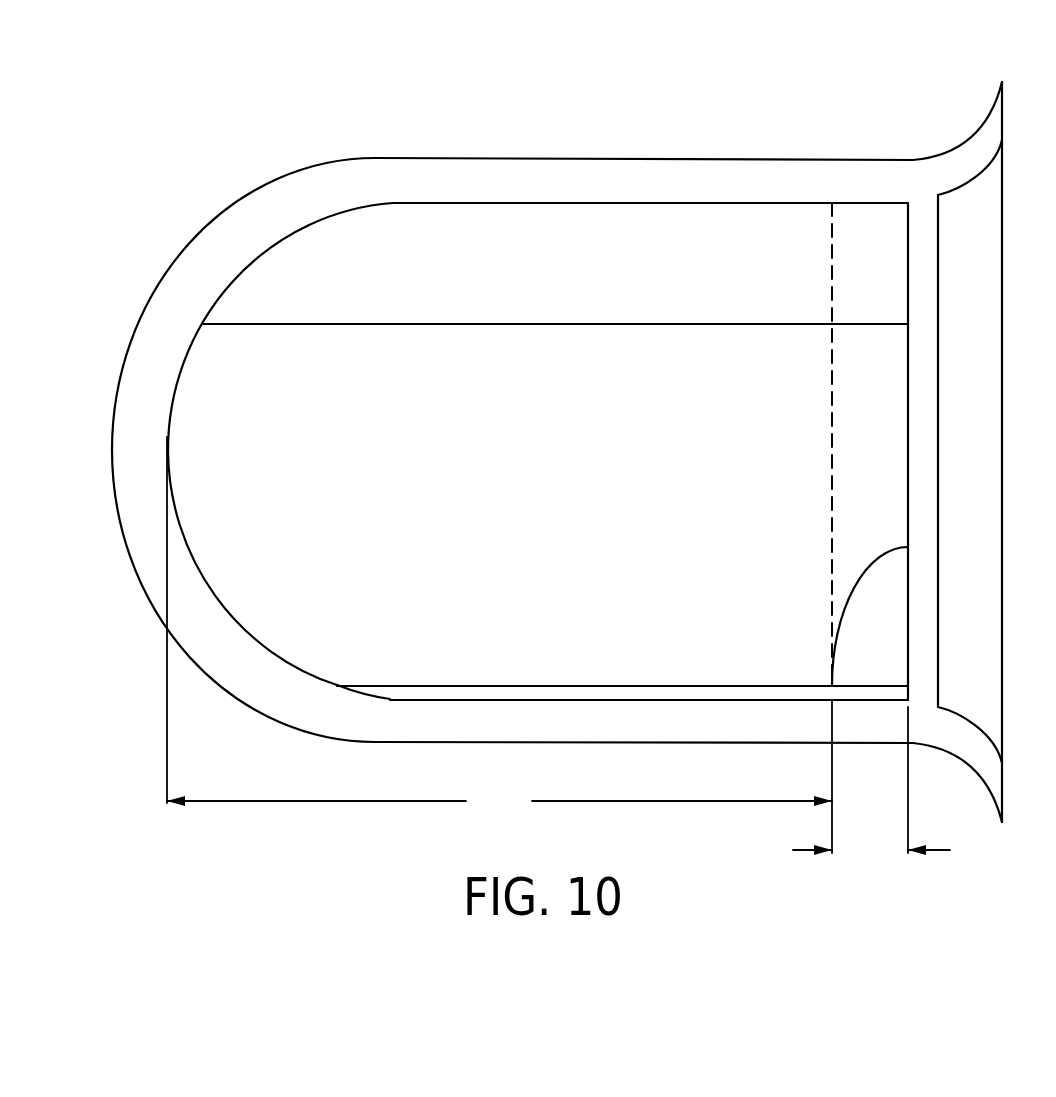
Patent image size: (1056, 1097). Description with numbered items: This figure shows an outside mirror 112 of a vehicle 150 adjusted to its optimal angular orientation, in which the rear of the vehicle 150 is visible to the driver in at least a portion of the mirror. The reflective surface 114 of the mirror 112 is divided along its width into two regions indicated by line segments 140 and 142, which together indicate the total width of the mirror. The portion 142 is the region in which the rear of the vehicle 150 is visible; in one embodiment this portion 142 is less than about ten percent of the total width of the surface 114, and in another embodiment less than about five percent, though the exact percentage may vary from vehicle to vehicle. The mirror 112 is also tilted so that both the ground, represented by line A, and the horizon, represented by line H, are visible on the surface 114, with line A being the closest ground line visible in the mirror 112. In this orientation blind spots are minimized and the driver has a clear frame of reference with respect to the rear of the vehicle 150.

The outside mirror 112 is at (557, 411).
The surface 114 is at (640, 220).
The vehicle 150 is at (858, 603).
The line segment 140 is at (499, 645).
The portion 142 is at (871, 788).
The horizon line H is at (402, 315).
The ground line A is at (622, 635).